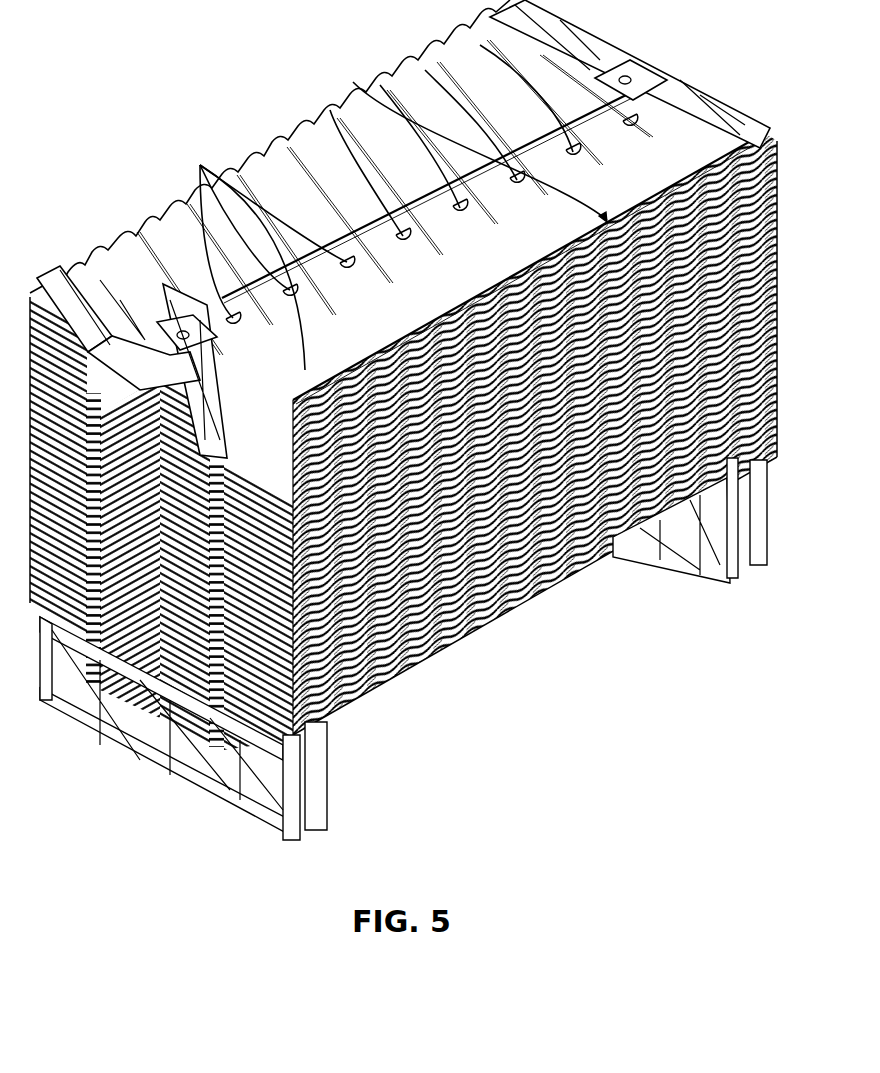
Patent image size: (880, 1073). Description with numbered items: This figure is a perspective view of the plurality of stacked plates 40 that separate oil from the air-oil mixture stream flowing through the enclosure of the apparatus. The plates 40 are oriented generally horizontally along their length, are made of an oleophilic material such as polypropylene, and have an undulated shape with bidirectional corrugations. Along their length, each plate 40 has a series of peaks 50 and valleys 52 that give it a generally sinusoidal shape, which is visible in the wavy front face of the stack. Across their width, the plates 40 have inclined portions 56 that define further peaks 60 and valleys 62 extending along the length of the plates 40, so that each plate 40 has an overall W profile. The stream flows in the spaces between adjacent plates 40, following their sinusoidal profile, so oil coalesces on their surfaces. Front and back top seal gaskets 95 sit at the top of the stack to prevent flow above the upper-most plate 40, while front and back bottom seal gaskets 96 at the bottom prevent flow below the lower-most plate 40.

The stacked plates 40 is at (166, 140).
The peaks 50 is at (305, 222).
The valleys 52 is at (305, 205).
The inclined portions 56 is at (200, 168).
The peaks 60 is at (345, 120).
The valleys 62 is at (483, 152).
The top seal gaskets 95 is at (85, 262).
The bottom seal gaskets 96 is at (322, 790).